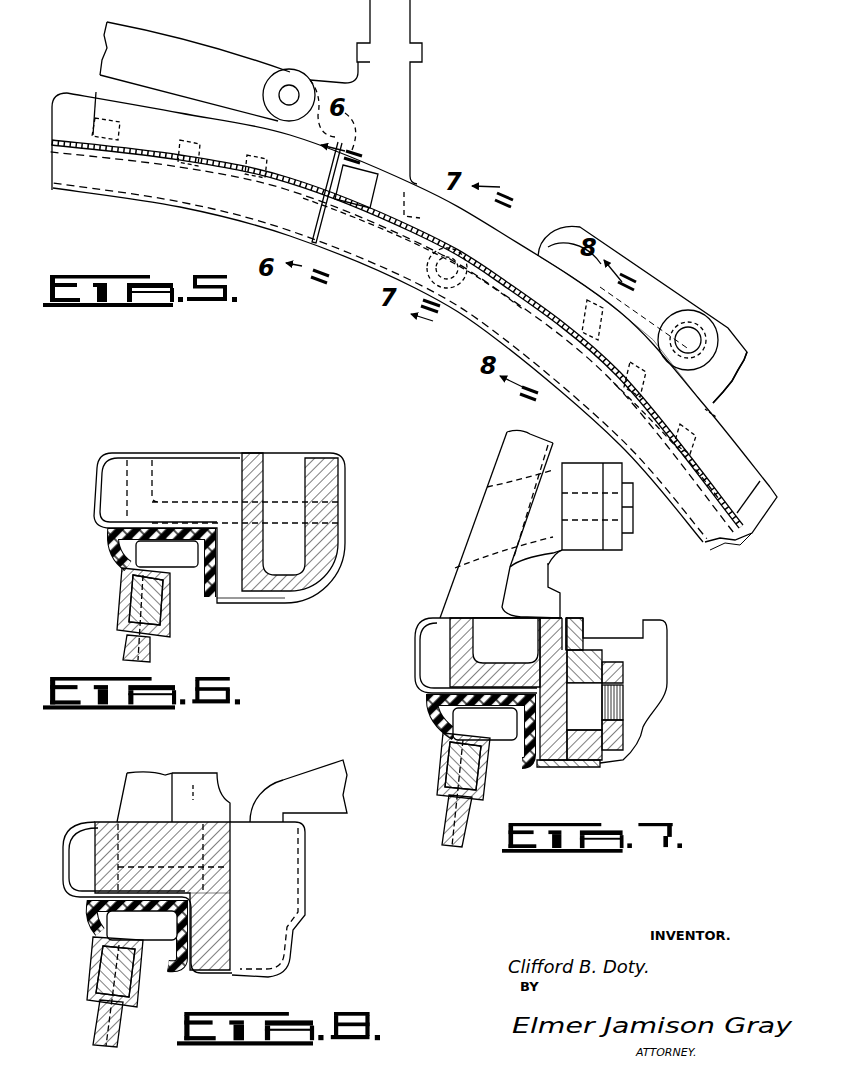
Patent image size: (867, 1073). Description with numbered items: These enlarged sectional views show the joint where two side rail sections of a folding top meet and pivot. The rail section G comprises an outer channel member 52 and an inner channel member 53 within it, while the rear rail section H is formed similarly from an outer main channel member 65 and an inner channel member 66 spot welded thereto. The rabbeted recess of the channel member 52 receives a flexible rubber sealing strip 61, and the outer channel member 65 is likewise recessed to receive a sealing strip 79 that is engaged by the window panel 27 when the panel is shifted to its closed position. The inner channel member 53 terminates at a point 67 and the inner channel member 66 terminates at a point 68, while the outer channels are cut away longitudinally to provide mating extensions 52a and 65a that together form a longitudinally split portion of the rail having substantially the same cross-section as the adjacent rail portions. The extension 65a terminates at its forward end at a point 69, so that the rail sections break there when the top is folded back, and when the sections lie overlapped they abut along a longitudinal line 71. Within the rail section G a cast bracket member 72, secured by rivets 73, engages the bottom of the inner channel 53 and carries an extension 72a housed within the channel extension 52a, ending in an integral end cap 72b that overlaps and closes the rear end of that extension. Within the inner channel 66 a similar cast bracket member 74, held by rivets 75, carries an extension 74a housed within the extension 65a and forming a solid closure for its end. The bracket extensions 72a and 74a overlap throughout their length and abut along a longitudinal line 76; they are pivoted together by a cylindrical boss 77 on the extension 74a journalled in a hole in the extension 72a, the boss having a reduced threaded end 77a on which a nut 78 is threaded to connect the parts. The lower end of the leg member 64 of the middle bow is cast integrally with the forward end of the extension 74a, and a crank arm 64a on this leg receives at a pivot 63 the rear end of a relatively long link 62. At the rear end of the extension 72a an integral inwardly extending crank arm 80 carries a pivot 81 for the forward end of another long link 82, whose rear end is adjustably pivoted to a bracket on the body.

In FIG. 6, the window panel 27 is at (170, 630).
In FIG. 7, the window panel 27 is at (443, 834).
In FIG. 8, the window panel 27 is at (93, 1024).
In FIG. 5, the channel member 52 is at (137, 203).
In FIG. 6, the channel member 52 is at (288, 603).
In FIG. 7, the extension 52a is at (625, 674).
In FIG. 5, the inner channel member 53 is at (70, 138).
In FIG. 6, the sealing strip 61 is at (115, 546).
In FIG. 5, the link 62 is at (213, 50).
In FIG. 7, the link 62 is at (612, 552).
In FIG. 8, the link 62 is at (201, 797).
In FIG. 5, the pivot 63 is at (288, 90).
In FIG. 5, the leg member 64 is at (405, 104).
In FIG. 7, the leg member 64 is at (462, 586).
In FIG. 8, the leg member 64 is at (144, 797).
In FIG. 5, the crank arm 64a is at (330, 77).
In FIG. 5, the outer main channel member 65 is at (712, 556).
In FIG. 5, the extension 65a is at (357, 265).
In FIG. 7, the extension 65a is at (433, 676).
In FIG. 8, the extension 65a is at (62, 890).
In FIG. 5, the inner channel member 66 is at (758, 484).
In FIG. 5, the point 67 is at (296, 167).
In FIG. 5, the point 68 is at (645, 318).
In FIG. 5, the point 69 is at (320, 212).
In FIG. 7, the longitudinal line 71 is at (562, 768).
In FIG. 5, the bracket member 72 is at (128, 104).
In FIG. 6, the bracket member 72 is at (185, 455).
In FIG. 6, the bracket extension 72a is at (257, 473).
In FIG. 7, the bracket extension 72a is at (574, 648).
In FIG. 8, the end cap 72b is at (307, 881).
In FIG. 5, the rivets 73 is at (145, 131).
In FIG. 5, the bracket member 74 is at (713, 433).
In FIG. 5, the bracket extension 74a is at (500, 232).
In FIG. 7, the bracket extension 74a is at (460, 648).
In FIG. 8, the bracket extension 74a is at (107, 838).
In FIG. 5, the rivets 75 is at (716, 414).
In FIG. 7, the longitudinal line 76 is at (563, 662).
In FIG. 8, the longitudinal line 76 is at (230, 878).
In FIG. 7, the cylindrical boss 77 is at (598, 705).
In FIG. 7, the reduced threaded end 77a is at (625, 700).
In FIG. 7, the nut 78 is at (605, 666).
In FIG. 7, the sealing strip 79 is at (513, 768).
In FIG. 8, the sealing strip 79 is at (163, 970).
In FIG. 5, the crank arm 80 is at (653, 279).
In FIG. 5, the pivot 81 is at (689, 337).
In FIG. 5, the link 82 is at (737, 354).
In FIG. 5, the rail section G is at (76, 199).
In FIG. 5, the rear rail section H is at (680, 521).